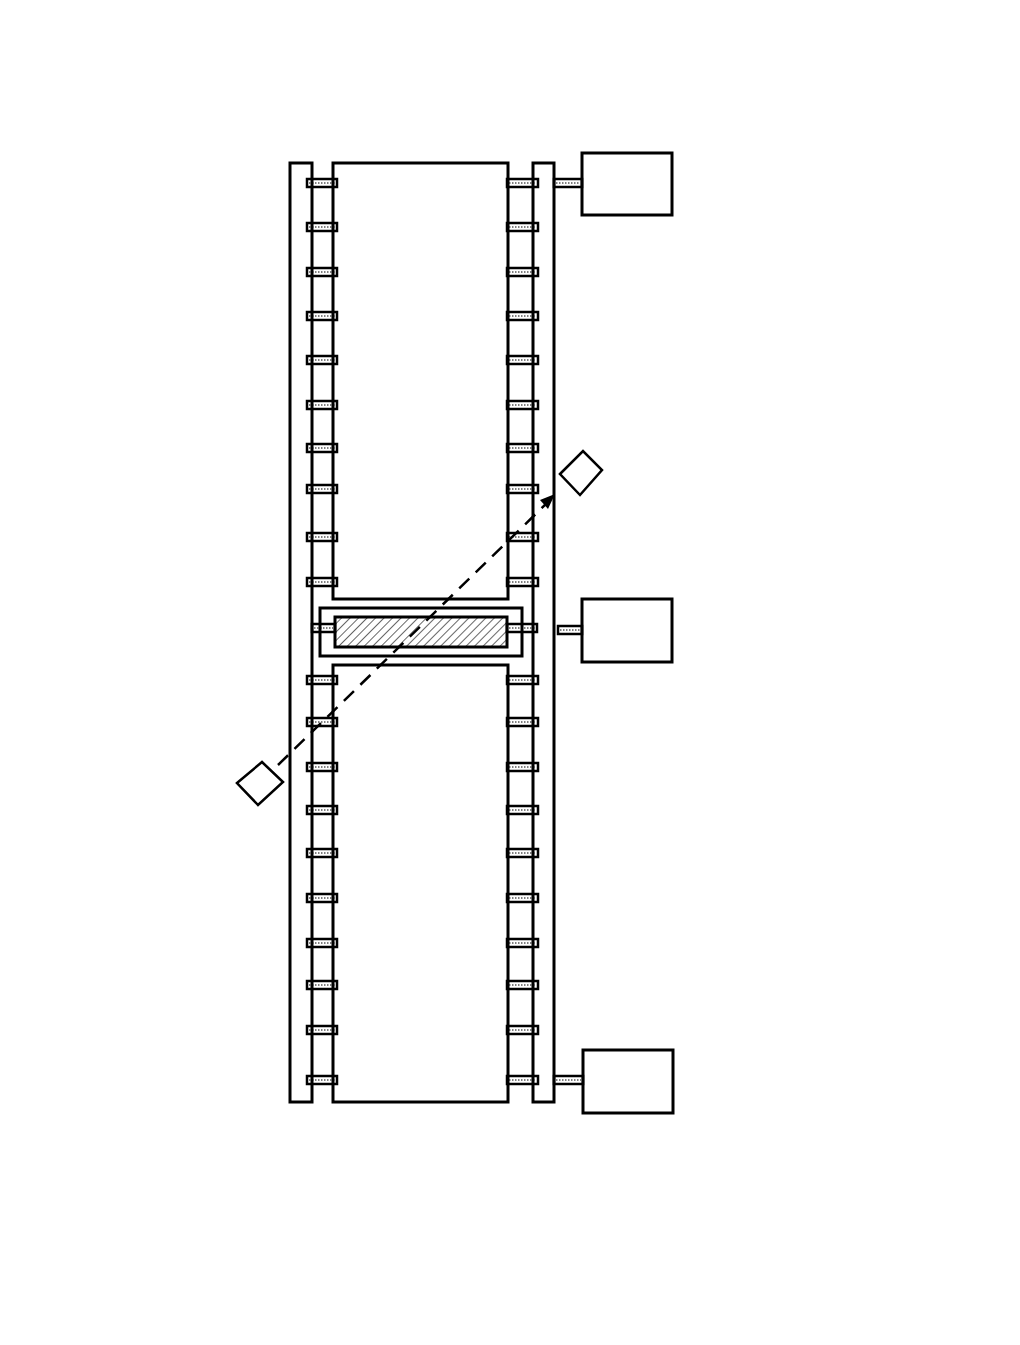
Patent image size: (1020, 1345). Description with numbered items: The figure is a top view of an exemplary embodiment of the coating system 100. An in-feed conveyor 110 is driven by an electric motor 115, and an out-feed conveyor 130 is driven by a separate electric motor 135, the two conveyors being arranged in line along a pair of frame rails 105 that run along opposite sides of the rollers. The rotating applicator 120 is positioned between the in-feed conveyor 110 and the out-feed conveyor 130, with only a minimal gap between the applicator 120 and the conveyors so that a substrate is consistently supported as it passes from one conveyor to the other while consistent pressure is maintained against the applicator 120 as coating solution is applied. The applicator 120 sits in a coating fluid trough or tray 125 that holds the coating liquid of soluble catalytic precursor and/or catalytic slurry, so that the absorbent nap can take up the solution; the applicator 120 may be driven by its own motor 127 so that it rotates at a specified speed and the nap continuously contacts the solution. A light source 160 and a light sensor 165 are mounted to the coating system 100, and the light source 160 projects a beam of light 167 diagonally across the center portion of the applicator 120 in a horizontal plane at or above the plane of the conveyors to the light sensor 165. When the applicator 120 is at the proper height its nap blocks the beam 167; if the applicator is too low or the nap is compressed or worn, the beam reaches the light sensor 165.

The coating system 100 is at (248, 180).
The rails 105 is at (305, 253).
The in-feed conveyor 110 is at (414, 1122).
The electric motor 115 is at (628, 1075).
The rotating applicator 120 is at (368, 623).
The coating fluid trough or tray 125 is at (320, 648).
The motor 127 is at (640, 623).
The out-feed conveyor 130 is at (410, 130).
The electric motor 135 is at (628, 180).
The light source 160 is at (243, 790).
The light sensor 165 is at (582, 472).
The sensing path 167 is at (477, 570).